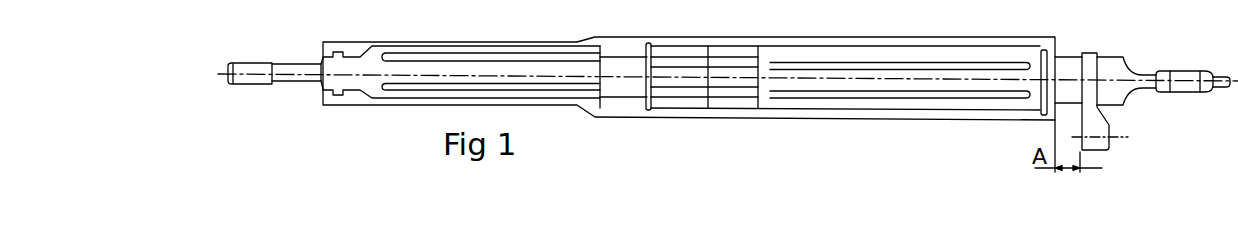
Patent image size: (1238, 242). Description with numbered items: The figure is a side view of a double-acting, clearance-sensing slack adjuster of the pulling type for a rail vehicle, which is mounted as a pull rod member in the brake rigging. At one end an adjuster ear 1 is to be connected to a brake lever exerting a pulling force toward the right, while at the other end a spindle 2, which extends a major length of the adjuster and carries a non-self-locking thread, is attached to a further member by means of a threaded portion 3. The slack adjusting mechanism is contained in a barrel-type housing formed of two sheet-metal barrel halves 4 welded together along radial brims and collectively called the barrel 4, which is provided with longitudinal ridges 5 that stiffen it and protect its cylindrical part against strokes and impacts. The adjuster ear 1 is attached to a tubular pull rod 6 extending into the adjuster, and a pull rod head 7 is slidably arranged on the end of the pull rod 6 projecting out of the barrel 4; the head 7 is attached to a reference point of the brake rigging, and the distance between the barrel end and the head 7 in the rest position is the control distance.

The adjuster ear 1 is at (1203, 93).
The spindle 2 is at (298, 77).
The threaded portion 3 is at (253, 77).
The barrel 4 is at (797, 103).
The longitudinal ridges 5 is at (616, 92).
The tubular pull rod 6 is at (1118, 102).
The pull rod head 7 is at (1104, 141).